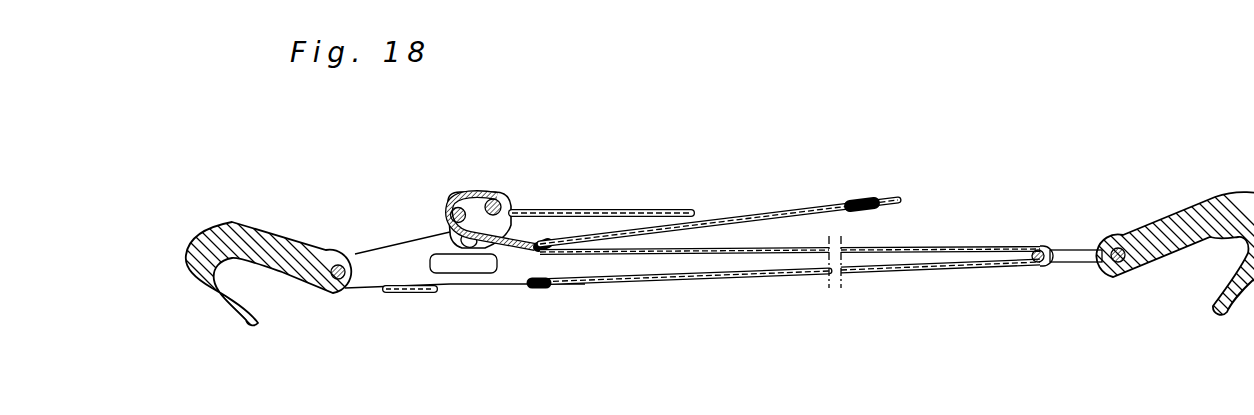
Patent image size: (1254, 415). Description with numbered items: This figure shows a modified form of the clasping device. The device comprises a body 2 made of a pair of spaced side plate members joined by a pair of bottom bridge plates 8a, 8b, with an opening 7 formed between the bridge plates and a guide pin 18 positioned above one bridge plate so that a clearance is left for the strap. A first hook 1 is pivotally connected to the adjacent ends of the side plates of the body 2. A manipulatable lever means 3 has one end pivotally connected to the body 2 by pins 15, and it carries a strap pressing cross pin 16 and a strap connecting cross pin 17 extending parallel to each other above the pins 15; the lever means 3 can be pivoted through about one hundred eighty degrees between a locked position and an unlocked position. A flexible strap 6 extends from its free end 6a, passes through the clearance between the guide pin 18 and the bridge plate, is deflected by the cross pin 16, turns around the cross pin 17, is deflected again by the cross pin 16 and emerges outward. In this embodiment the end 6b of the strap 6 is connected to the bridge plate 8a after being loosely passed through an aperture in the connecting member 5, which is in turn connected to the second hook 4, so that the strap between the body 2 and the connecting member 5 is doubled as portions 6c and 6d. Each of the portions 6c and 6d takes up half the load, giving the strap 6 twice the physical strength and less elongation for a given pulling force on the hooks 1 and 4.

The first hook 1 is at (262, 231).
The body 2 is at (364, 294).
The manipulatable lever means 3 is at (607, 208).
The second hook 4 is at (1201, 212).
The connecting member 5 is at (1073, 250).
The flexible strap 6 is at (921, 244).
The free end of strap 6a is at (848, 200).
The end of strap 6b is at (587, 286).
The strap portion 6c is at (750, 249).
The strap portion 6d is at (790, 277).
The opening 7 is at (485, 286).
The bottom bridge plate 8a is at (540, 291).
The bottom bridge plate 8b is at (420, 293).
The pin 15 is at (448, 228).
The cross pin 16 is at (457, 191).
The cross pin 17 is at (494, 191).
The guide pin 18 is at (543, 238).